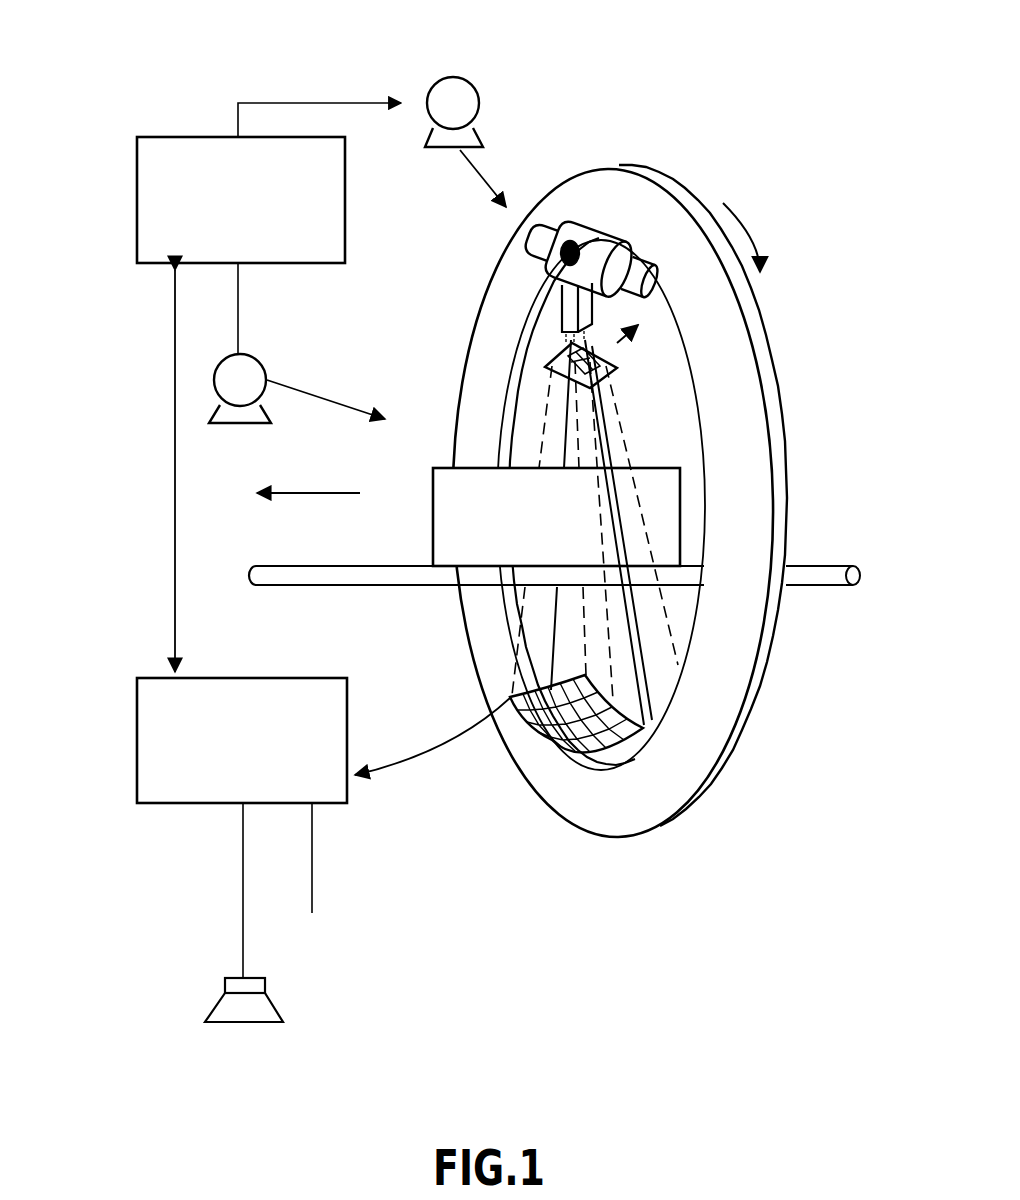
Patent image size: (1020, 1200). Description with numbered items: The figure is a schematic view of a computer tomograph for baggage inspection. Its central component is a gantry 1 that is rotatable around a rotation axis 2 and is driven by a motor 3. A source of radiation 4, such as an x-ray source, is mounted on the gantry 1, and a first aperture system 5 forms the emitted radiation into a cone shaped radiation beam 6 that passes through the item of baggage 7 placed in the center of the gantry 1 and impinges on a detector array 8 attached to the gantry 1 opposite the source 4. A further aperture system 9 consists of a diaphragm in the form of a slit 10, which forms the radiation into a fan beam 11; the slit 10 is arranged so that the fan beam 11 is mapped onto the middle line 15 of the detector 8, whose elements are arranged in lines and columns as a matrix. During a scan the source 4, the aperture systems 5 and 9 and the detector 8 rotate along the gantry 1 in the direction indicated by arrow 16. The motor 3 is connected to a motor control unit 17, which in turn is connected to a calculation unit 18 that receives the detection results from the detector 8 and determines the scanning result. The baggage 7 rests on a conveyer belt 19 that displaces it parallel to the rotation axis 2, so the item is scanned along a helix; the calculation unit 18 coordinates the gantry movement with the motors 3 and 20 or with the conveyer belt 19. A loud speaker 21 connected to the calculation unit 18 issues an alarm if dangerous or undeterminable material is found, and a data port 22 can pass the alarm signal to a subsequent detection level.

The gantry 1 is at (743, 683).
The rotation axis 2 is at (293, 497).
The motor 3 is at (453, 77).
The source of radiation 4 is at (587, 228).
The first aperture system 5 is at (562, 310).
The cone shaped radiation beam 6 is at (612, 391).
The item of baggage 7 is at (433, 488).
The detector array 8 is at (542, 757).
The aperture system 9 is at (553, 364).
The slit 10 is at (603, 358).
The fan beam 11 is at (607, 433).
The middle line 15 is at (547, 685).
The arrow 16 is at (737, 220).
The motor control unit 17 is at (137, 200).
The calculation unit 18 is at (145, 738).
The conveyer belt 19 is at (838, 566).
The motor 20 is at (260, 358).
The loud speaker 21 is at (245, 1023).
The data port 22 is at (313, 898).